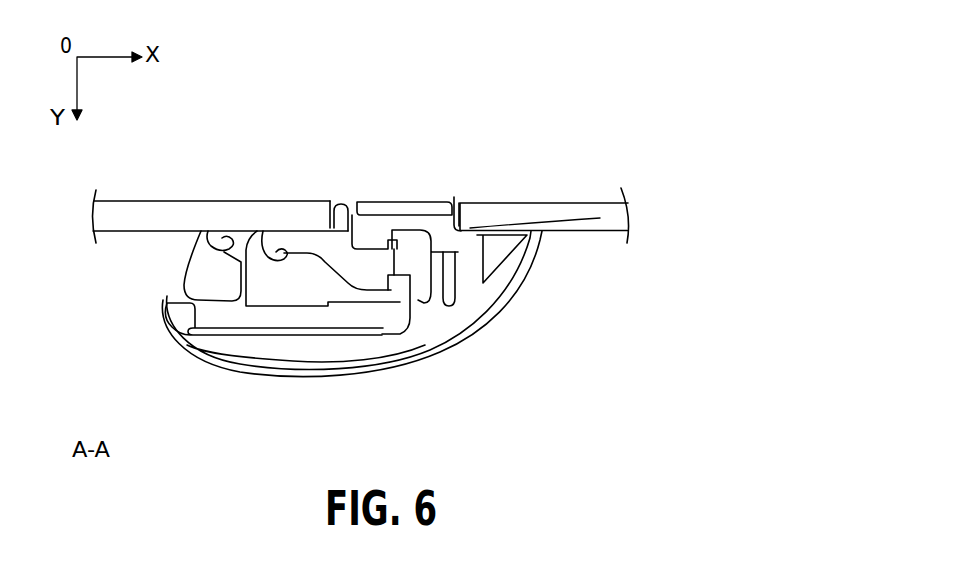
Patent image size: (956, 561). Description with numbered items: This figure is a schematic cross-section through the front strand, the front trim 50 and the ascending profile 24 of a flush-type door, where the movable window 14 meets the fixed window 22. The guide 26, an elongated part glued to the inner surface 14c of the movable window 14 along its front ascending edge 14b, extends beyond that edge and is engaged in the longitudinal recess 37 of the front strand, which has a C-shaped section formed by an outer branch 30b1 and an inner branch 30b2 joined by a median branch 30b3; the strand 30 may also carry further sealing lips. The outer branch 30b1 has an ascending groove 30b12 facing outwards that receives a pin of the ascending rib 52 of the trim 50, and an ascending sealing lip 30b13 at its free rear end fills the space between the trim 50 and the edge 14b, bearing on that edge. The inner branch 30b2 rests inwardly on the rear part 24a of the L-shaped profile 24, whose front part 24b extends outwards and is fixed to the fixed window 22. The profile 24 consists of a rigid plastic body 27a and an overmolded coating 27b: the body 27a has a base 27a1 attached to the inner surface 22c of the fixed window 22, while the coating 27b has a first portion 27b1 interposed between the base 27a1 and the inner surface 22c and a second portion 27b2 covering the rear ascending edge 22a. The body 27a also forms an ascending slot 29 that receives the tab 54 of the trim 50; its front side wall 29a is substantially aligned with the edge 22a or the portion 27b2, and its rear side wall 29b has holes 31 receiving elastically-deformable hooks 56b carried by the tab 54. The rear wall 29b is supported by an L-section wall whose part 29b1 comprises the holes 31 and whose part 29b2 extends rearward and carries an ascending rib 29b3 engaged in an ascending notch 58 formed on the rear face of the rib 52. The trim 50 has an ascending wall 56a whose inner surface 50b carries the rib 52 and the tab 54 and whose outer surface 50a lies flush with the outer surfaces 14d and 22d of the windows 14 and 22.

The movable window 14 is at (188, 201).
The front ascending edge 14b is at (333, 203).
The inner surface 14c is at (163, 233).
The outer surface 14d is at (222, 200).
The fixed window 22 is at (587, 208).
The rear ascending edge 22a is at (518, 202).
The inner surface 22c is at (600, 230).
The outer surface 22d is at (560, 186).
The ascending profile 24 is at (453, 298).
The rear part 24a is at (255, 370).
The front part 24b is at (530, 283).
The guide 26 is at (290, 231).
The body 27a is at (277, 347).
The base 27a1 is at (513, 258).
The overmolded coating 27b is at (500, 292).
The first portion 27b1 is at (600, 218).
The second portion 27b2 is at (507, 202).
The ascending slot 29 is at (445, 332).
The front side wall 29a is at (505, 325).
The rear side wall 29b is at (444, 302).
The wall part 29b1 is at (385, 273).
The wall part 29b2 is at (418, 250).
The ascending rib 29b3 is at (400, 224).
The strand 30 is at (187, 336).
The outer branch 30b1 is at (362, 215).
The ascending groove 30b12 is at (373, 283).
The ascending sealing lip 30b13 is at (336, 207).
The inner branch 30b2 is at (371, 320).
The median branch 30b3 is at (441, 258).
The holes 31 is at (547, 202).
The longitudinal recess 37 is at (398, 335).
The front trim 50 is at (458, 200).
The outer surface 50a is at (434, 190).
The inner surface 50b is at (530, 202).
The ascending rib 52 is at (392, 230).
The tab 54 is at (563, 202).
The ascending wall 56a is at (483, 202).
The elastically-deformable hooks 56b is at (527, 235).
The ascending notch 58 is at (398, 248).